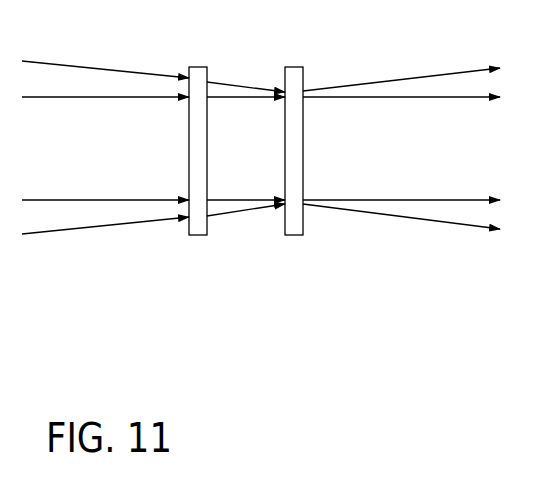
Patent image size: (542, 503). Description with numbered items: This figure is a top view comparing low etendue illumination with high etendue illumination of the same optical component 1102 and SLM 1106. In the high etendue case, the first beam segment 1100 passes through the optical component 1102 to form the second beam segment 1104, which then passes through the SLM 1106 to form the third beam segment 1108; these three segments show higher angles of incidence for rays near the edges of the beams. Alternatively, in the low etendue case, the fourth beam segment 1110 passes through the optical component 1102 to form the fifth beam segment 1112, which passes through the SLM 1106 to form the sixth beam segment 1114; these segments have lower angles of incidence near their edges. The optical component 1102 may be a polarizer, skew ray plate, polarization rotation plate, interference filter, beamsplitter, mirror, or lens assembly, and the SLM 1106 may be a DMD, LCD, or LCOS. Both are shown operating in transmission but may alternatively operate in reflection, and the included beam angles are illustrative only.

The first beam segment 1100 is at (135, 72).
The optical component 1102 is at (198, 237).
The second beam segment 1104 is at (242, 85).
The SLM 1106 is at (295, 236).
The third beam segment 1108 is at (365, 80).
The fourth beam segment 1110 is at (88, 200).
The fifth beam segment 1112 is at (258, 201).
The sixth beam segment 1114 is at (426, 201).